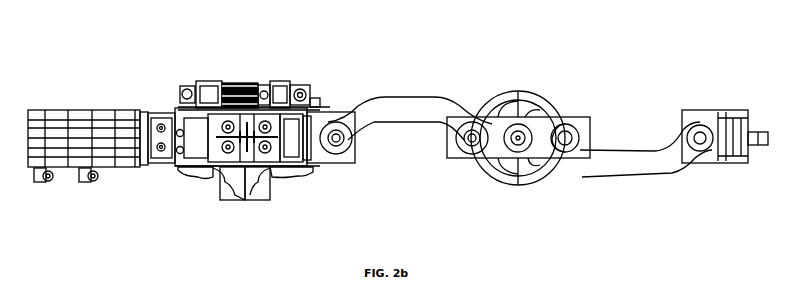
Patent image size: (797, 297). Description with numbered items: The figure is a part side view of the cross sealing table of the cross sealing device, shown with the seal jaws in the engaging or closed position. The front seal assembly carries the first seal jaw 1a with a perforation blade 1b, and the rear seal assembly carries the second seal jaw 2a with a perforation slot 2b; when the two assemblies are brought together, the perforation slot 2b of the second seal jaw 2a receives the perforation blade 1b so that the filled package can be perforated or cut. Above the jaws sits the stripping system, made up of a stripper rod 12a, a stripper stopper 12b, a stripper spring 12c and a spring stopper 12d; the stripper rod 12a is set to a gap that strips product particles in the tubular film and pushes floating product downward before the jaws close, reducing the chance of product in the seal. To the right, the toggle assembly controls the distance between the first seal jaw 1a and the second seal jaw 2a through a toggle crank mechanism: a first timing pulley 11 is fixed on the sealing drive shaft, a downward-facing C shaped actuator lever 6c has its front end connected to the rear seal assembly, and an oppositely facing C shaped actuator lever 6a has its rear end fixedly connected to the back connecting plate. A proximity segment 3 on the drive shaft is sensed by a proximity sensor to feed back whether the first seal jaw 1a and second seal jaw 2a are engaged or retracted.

The first seal jaw 1a is at (207, 172).
The perforation blade 1b is at (177, 112).
The second seal jaw 2a is at (277, 172).
The perforation slot 2b is at (310, 102).
The stripper rod 12a is at (197, 85).
The stripper stopper 12b is at (242, 92).
The stripper spring 12c is at (262, 90).
The spring stopper 12d is at (307, 85).
The C shaped actuator lever 6c is at (425, 123).
The proximity segment 3 is at (490, 90).
The first timing pulley 11 is at (535, 95).
The C shaped actuator lever 6a is at (633, 150).